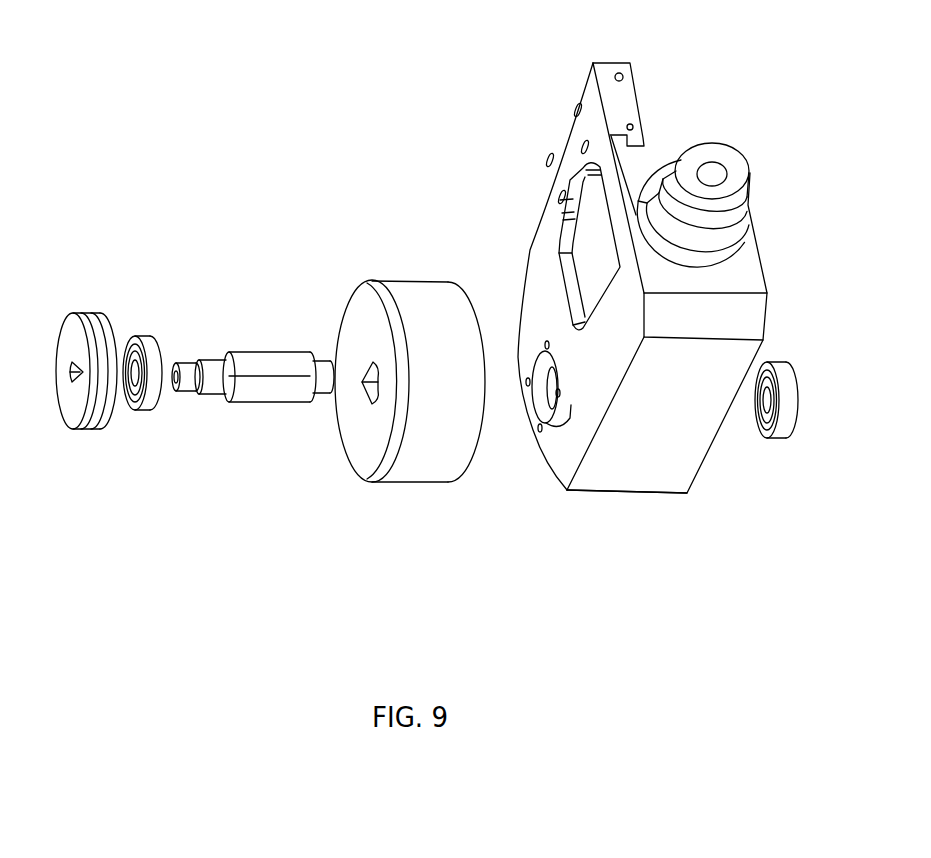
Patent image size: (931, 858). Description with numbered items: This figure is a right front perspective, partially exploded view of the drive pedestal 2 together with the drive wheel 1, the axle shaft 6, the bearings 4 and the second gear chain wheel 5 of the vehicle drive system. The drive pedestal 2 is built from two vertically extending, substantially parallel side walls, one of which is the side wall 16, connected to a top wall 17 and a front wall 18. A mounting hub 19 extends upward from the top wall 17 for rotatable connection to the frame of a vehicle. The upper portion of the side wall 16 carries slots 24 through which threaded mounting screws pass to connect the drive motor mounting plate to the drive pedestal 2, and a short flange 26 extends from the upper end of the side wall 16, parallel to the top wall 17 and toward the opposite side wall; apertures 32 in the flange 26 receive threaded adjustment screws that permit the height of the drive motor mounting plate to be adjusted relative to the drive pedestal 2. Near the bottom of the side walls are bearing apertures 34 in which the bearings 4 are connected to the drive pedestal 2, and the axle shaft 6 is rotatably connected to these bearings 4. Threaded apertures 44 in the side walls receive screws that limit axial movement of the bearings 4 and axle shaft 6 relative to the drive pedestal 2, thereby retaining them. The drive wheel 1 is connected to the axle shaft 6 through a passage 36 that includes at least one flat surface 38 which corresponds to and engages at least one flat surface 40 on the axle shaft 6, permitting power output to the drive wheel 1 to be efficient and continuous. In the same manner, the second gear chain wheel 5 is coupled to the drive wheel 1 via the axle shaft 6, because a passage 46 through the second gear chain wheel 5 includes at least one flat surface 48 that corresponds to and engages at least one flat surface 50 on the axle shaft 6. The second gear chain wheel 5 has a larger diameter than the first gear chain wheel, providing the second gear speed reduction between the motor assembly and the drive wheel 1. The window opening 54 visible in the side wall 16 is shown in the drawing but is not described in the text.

The drive wheel 1 is at (401, 394).
The drive pedestal 2 is at (630, 283).
The bearings 4 is at (152, 405).
The second gear chain wheel 5 is at (81, 380).
The axle shaft 6 is at (253, 375).
The side wall 16 is at (558, 478).
The top wall 17 is at (708, 187).
The front wall 18 is at (665, 480).
The mounting hub 19 is at (731, 168).
The slots 24 is at (560, 191).
The flange 26 is at (628, 98).
The apertures 32 is at (619, 73).
The bearing apertures 34 is at (538, 400).
The passage 36 is at (367, 372).
The flat surface 38 is at (368, 392).
The flat surface 40 is at (278, 362).
The threaded apertures 44 is at (547, 342).
The passage 46 is at (72, 369).
The flat surface 48 is at (72, 376).
The flat surface 50 is at (186, 366).
The window opening 54 is at (567, 237).